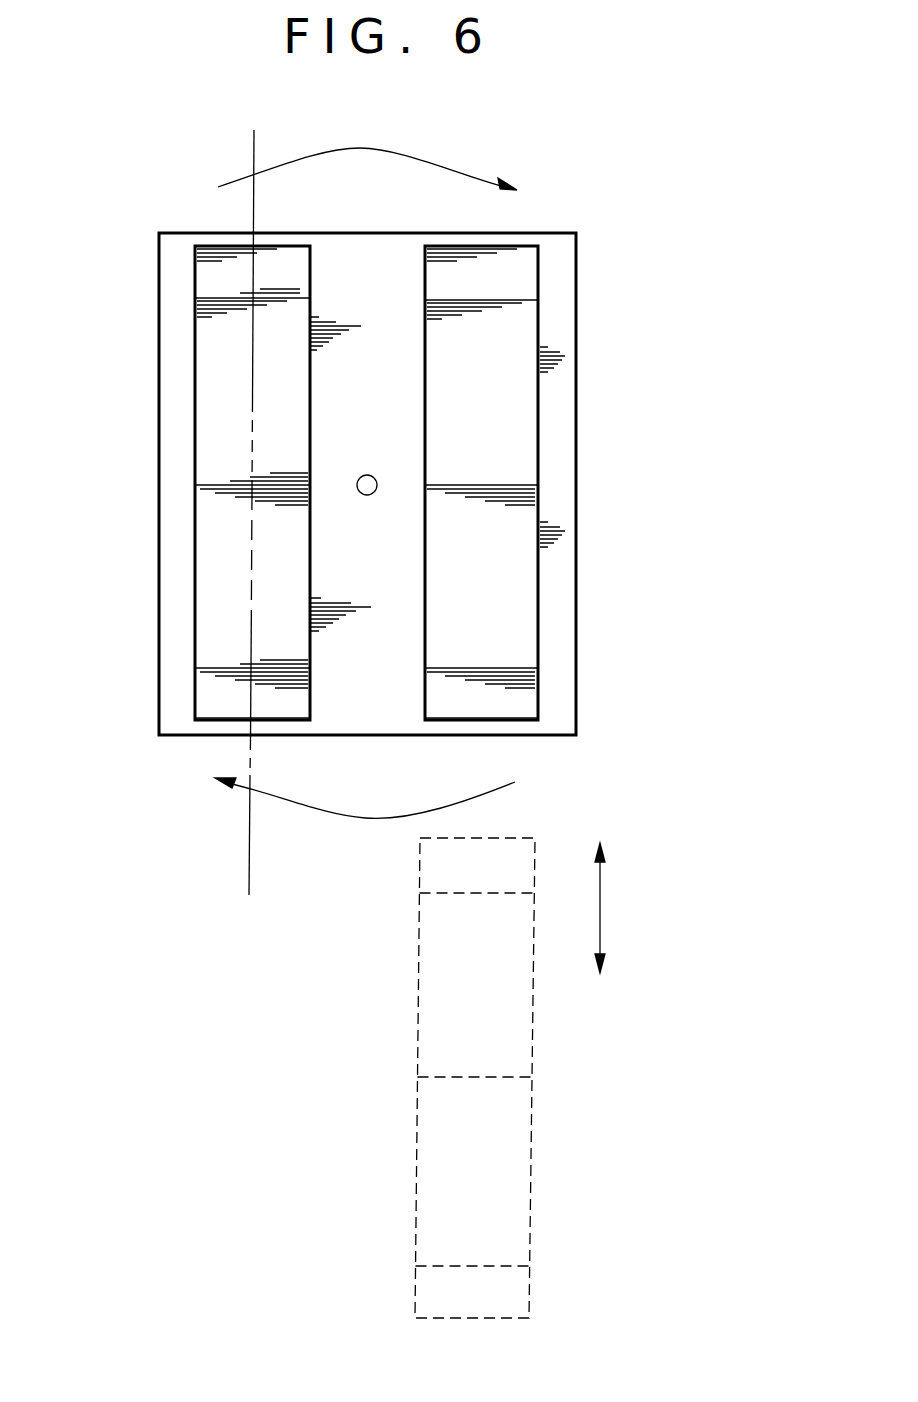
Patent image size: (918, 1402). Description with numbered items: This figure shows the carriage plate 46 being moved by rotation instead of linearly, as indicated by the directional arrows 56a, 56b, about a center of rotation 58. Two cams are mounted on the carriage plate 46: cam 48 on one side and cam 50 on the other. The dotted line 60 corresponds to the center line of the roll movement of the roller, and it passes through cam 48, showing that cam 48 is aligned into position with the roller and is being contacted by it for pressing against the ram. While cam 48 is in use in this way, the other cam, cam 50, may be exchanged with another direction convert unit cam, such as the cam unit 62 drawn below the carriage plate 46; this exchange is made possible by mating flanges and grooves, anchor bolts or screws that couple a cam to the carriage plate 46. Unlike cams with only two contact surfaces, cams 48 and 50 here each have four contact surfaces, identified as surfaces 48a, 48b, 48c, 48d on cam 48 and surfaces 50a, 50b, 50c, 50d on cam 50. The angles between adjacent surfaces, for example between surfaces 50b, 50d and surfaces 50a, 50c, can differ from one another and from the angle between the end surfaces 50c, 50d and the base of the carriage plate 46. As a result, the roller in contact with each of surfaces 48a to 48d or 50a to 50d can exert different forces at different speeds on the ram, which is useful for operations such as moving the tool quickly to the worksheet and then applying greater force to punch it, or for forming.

The carriage plate 46 is at (578, 323).
The cam 48 is at (193, 620).
The contact surface 48a is at (240, 589).
The contact surface 48b is at (242, 405).
The contact surface 48c is at (240, 709).
The contact surface 48d is at (238, 289).
The cam 50 is at (538, 445).
The contact surface 50a is at (496, 589).
The contact surface 50b is at (496, 405).
The contact surface 50c is at (494, 709).
The contact surface 50d is at (500, 289).
The directional arrow 56a is at (428, 158).
The directional arrow 56b is at (312, 810).
The center of rotation 58 is at (367, 480).
The dotted line 60 is at (249, 868).
The cam unit 62 is at (418, 1122).